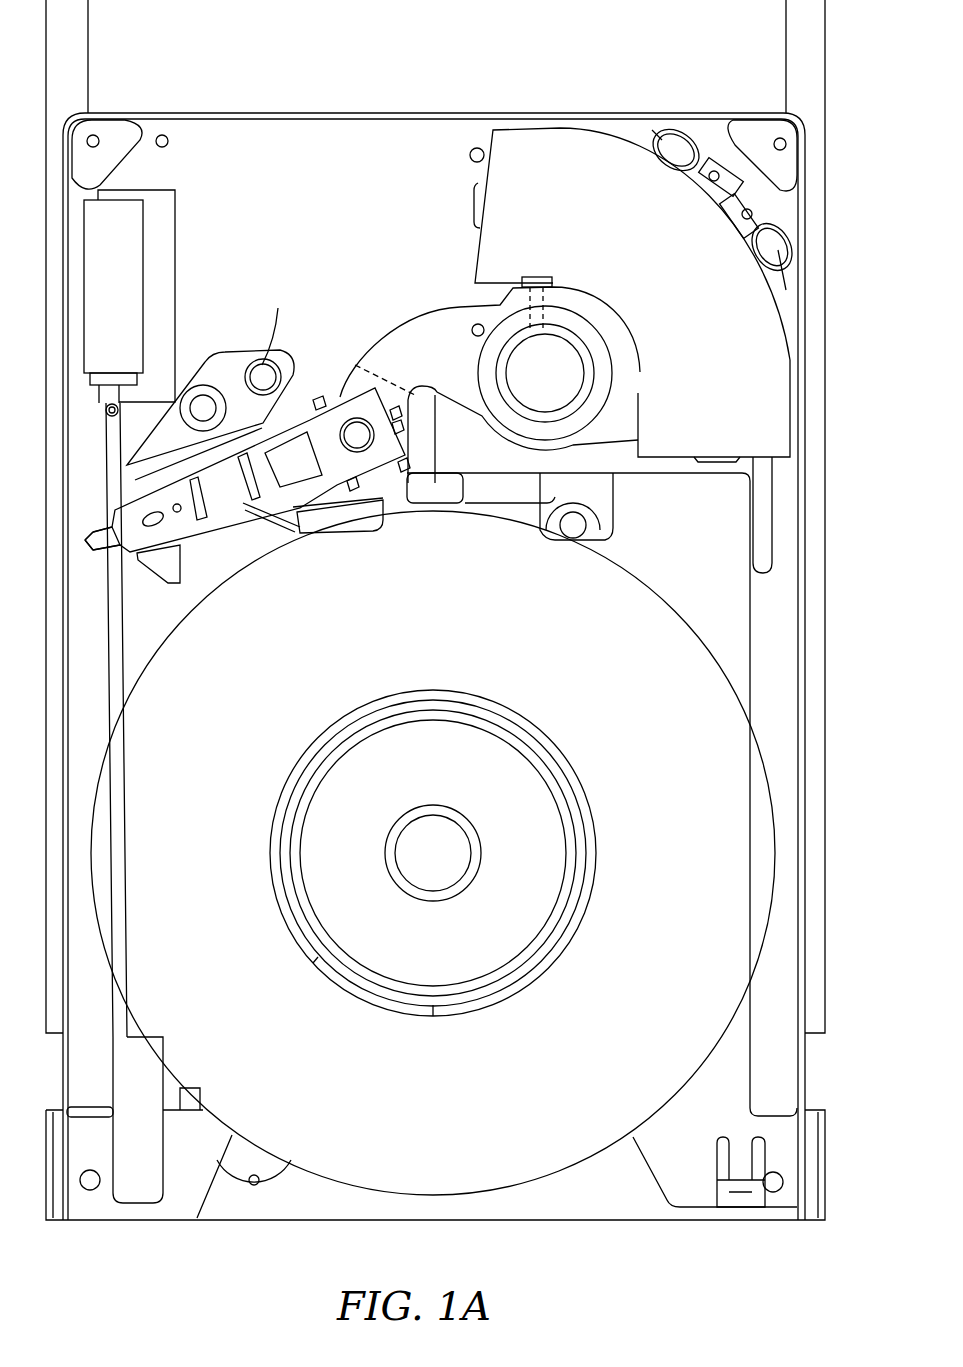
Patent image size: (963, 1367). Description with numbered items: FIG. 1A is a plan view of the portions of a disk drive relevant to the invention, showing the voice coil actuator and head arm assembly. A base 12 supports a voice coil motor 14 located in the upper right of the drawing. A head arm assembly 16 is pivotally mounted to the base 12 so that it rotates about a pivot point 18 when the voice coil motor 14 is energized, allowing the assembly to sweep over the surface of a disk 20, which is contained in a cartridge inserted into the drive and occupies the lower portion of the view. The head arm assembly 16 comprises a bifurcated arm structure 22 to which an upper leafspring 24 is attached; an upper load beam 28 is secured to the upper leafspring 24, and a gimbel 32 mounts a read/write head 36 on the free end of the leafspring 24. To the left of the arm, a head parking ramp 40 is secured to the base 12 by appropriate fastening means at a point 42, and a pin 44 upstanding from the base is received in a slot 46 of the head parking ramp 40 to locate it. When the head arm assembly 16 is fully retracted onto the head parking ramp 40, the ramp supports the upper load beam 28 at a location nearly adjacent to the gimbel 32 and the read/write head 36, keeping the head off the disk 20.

The base 12 is at (818, 33).
The voice coil motor 14 is at (553, 155).
The head arm assembly 16 is at (358, 320).
The pivot point 18 is at (560, 365).
The disk 20 is at (697, 866).
The bifurcated arm structure 22 is at (425, 325).
The upper leafspring 24 is at (232, 503).
The upper load beam 28 is at (137, 557).
The gimbel 32 is at (95, 528).
The read/write head 36 is at (88, 545).
The head parking ramp 40 is at (228, 383).
The fastening point 42 is at (207, 398).
The pin 44 is at (280, 325).
The slot 46 is at (286, 355).